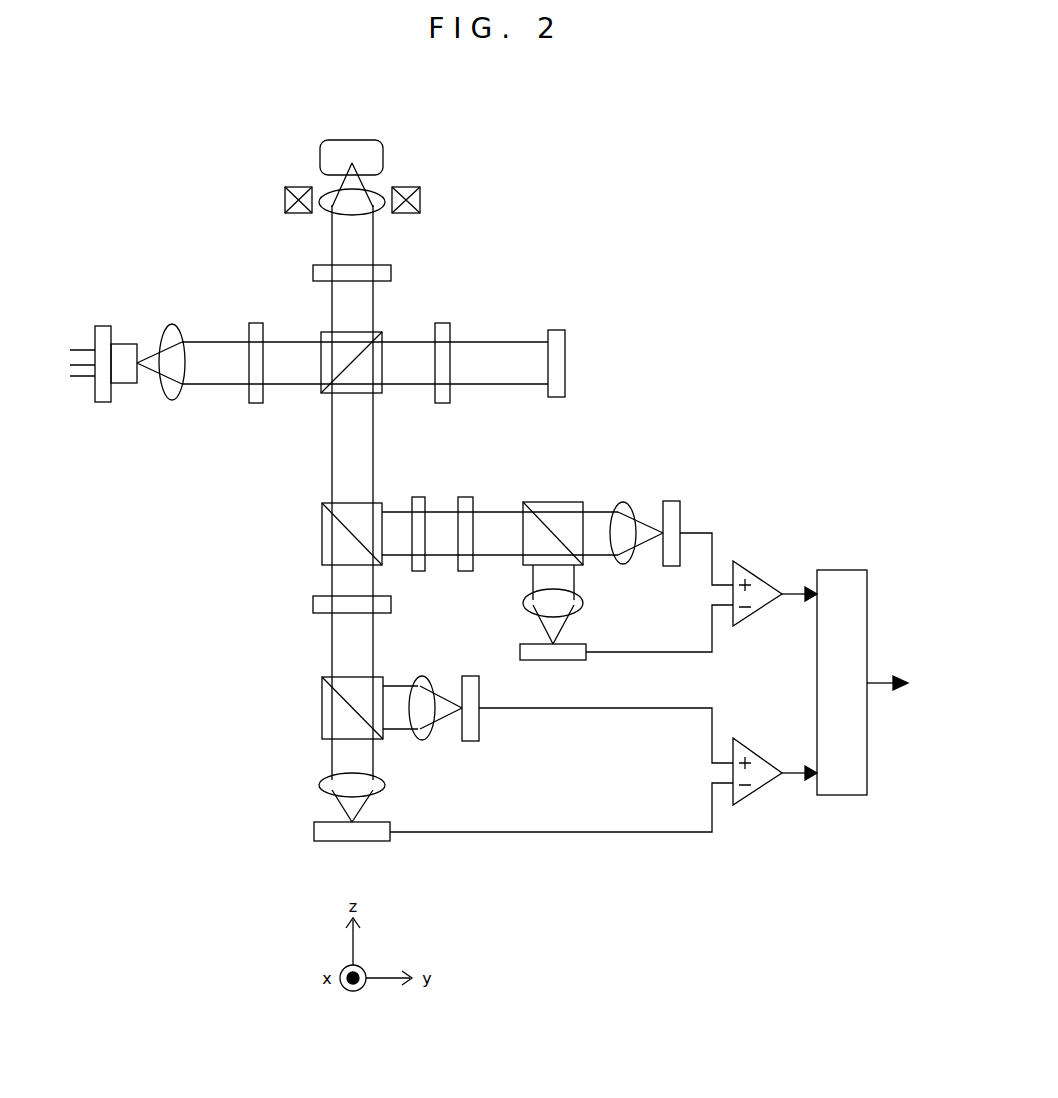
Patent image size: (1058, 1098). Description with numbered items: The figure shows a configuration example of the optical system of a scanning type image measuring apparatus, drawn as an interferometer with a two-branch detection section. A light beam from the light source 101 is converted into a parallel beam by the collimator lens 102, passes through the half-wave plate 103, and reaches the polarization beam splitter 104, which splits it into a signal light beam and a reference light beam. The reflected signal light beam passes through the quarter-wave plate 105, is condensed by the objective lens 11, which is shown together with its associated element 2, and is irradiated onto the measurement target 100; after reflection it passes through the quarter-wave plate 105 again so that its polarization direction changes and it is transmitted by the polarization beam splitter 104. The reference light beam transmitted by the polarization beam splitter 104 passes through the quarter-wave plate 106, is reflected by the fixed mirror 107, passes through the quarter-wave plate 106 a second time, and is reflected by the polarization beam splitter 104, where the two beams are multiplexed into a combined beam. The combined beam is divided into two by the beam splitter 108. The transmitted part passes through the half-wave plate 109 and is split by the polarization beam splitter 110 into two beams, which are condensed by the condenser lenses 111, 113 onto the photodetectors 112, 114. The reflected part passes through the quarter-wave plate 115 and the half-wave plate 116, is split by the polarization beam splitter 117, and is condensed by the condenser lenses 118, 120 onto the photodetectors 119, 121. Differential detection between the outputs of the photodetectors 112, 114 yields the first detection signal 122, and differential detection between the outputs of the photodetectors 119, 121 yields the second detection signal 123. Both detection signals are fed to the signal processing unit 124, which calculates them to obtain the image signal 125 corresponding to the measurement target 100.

The objective lens actuator 2 is at (430, 198).
The objective lens 11 is at (375, 210).
The measurement target 100 is at (383, 150).
The light source 101 is at (113, 402).
The collimator lens 102 is at (170, 326).
The half-wave plate 103 is at (256, 403).
The polarization beam splitter 104 is at (322, 333).
The quarter-wave plate 105 is at (316, 270).
The quarter-wave plate 106 is at (443, 323).
The fixed mirror 107 is at (555, 330).
The beam splitter 108 is at (320, 523).
The half-wave plate 109 is at (313, 605).
The polarization beam splitter 110 is at (322, 700).
The condenser lens 111 is at (320, 778).
The photodetector 112 is at (314, 825).
The condenser lens 113 is at (420, 740).
The photodetector 114 is at (470, 741).
The quarter-wave plate 115 is at (418, 497).
The half-wave plate 116 is at (465, 497).
The polarization beam splitter 117 is at (553, 502).
The condenser lens 118 is at (583, 603).
The photodetector 119 is at (565, 660).
The condenser lens 120 is at (618, 505).
The photodetector 121 is at (672, 501).
The first detection signal 122 is at (785, 777).
The second detection signal 123 is at (784, 590).
The signal processing unit 124 is at (840, 570).
The image signal 125 is at (883, 683).